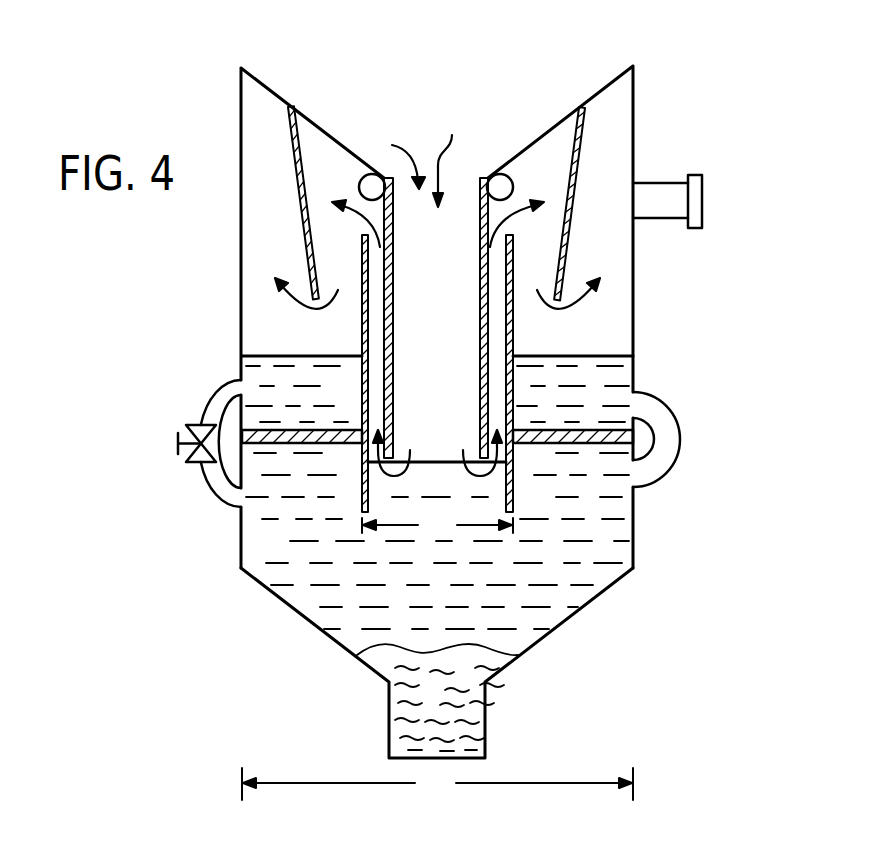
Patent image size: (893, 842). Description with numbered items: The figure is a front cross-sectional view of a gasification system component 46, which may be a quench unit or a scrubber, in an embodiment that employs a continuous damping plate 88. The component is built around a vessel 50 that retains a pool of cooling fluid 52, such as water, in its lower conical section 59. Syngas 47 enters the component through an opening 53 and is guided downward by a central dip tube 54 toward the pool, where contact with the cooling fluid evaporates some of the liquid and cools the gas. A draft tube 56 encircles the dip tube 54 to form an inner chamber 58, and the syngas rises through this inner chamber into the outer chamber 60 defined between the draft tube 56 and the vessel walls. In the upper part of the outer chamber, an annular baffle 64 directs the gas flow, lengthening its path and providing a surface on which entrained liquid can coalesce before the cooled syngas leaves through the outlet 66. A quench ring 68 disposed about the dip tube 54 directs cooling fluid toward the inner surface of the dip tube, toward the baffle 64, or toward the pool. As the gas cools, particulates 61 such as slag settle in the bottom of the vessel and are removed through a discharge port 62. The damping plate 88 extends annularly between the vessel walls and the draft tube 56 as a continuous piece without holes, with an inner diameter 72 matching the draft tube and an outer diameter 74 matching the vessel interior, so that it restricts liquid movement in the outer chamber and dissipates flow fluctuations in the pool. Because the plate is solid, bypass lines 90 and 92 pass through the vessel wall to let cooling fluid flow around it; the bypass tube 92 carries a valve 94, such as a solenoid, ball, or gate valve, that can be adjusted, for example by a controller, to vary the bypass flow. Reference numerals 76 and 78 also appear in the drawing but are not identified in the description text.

The gasification system component 46 is at (672, 44).
The syngas 47 is at (450, 157).
The vessel 50 is at (633, 283).
The cooling fluid 52 is at (242, 548).
The opening 53 is at (394, 156).
The dip tube 54 is at (386, 362).
The draft tube 56 is at (362, 318).
The inner chamber 58 is at (498, 308).
The conical section 59 is at (570, 617).
The outer chamber 60 is at (617, 330).
The particulates 61 is at (400, 710).
The discharge port 62 is at (487, 712).
The annular baffle 64 is at (582, 163).
The outlet 66 is at (700, 175).
The quench ring 68 is at (510, 182).
The inner diameter 72 is at (437, 526).
The outer diameter 74 is at (437, 784).
The left tube 76 is at (242, 347).
The gap 78 is at (422, 458).
The damping plate 88 is at (593, 430).
The bypass line 90 is at (663, 418).
The bypass tube 92 is at (201, 412).
The valve 94 is at (195, 465).